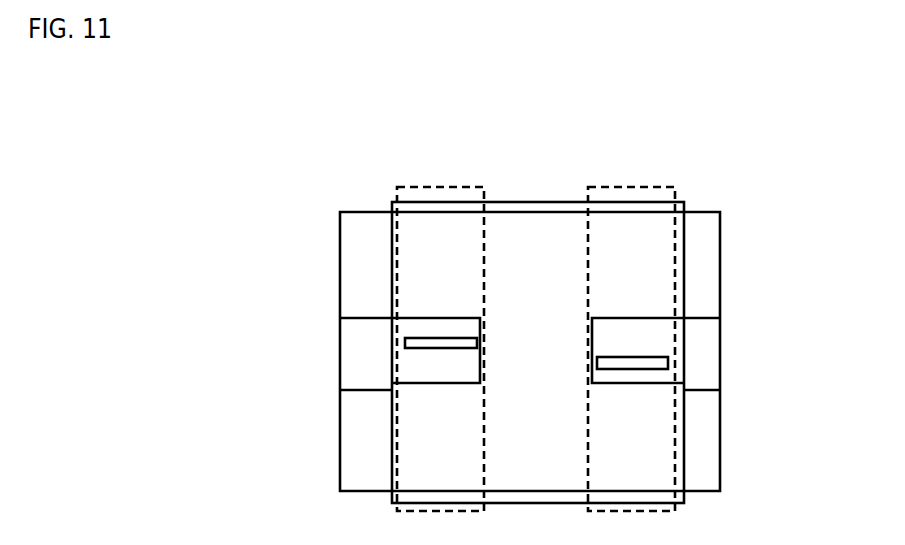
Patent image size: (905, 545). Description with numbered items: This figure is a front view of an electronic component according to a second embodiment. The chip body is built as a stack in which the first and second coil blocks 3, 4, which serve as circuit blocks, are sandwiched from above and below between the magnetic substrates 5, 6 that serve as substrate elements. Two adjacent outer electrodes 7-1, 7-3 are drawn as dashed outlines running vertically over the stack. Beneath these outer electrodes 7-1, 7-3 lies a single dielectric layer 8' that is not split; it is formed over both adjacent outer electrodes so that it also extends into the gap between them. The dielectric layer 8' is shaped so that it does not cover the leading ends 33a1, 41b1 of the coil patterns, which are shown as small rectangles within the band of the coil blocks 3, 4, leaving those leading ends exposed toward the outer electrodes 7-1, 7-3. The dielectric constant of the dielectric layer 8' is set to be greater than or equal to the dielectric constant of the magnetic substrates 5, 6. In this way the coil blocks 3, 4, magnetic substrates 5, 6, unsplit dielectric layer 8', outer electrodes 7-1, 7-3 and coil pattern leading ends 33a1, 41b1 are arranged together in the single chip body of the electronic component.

The magnetic substrate 6 is at (708, 228).
The magnetic substrate 5 is at (708, 460).
The dielectric layer 8' is at (608, 352).
The first coil block 3 is at (598, 345).
The second coil block 4 is at (720, 330).
The outer electrode 7-1 is at (407, 185).
The outer electrode 7-3 is at (604, 187).
The leading end of coil pattern 33a1 is at (425, 343).
The leading end of coil pattern 41b1 is at (645, 363).